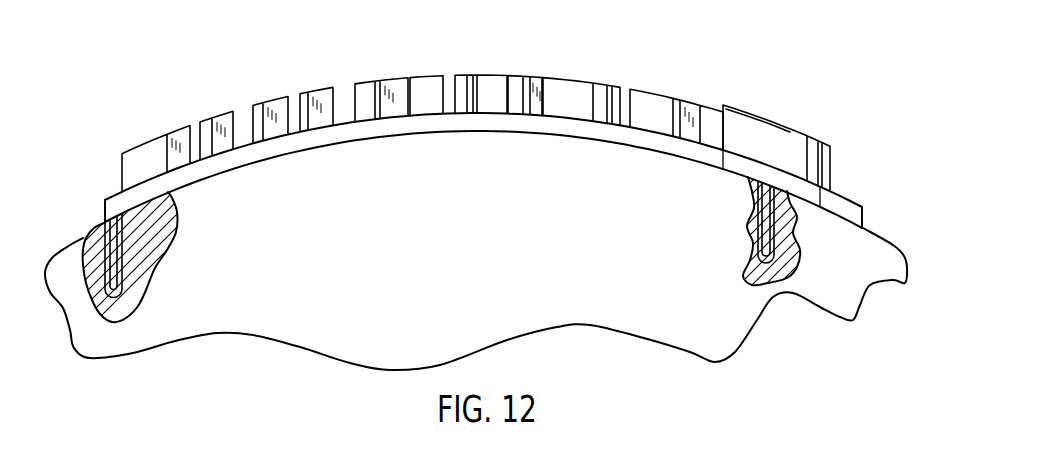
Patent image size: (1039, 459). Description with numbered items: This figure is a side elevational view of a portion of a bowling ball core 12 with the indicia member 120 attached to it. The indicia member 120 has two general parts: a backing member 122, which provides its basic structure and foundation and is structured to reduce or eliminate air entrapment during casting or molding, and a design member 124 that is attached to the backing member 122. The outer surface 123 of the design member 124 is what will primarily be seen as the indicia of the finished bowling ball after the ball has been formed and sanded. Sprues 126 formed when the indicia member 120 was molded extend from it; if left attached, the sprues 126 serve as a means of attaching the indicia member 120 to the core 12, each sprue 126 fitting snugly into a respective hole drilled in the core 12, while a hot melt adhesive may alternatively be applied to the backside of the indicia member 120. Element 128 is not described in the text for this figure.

The core 12 is at (873, 250).
The indicia member 120 is at (483, 123).
The backing member 122 is at (233, 160).
The outer surface 123 is at (492, 79).
The design member 124 is at (729, 79).
The sprues 126 is at (112, 268).
The mounting pin 128 is at (123, 294).